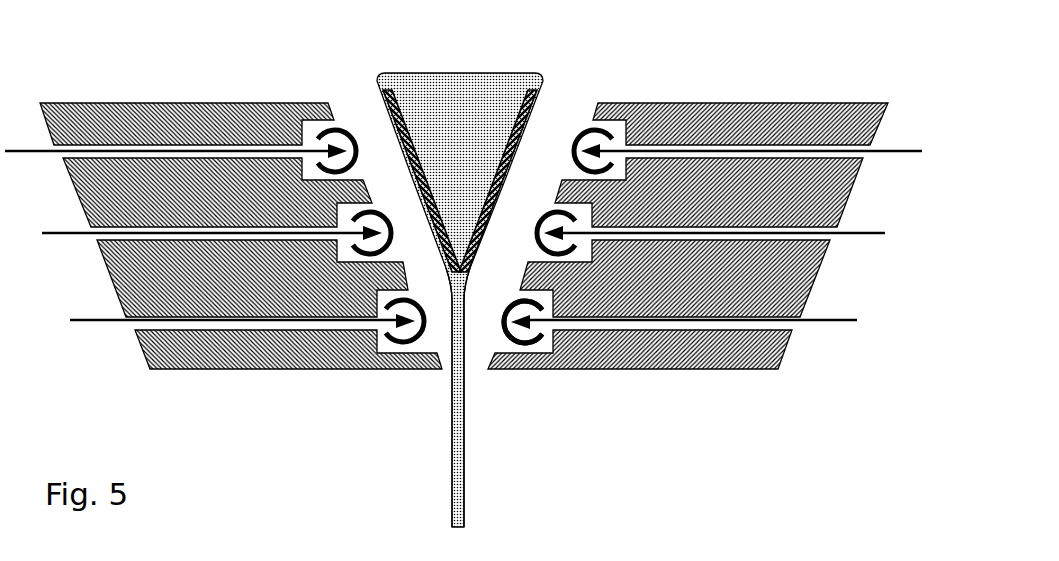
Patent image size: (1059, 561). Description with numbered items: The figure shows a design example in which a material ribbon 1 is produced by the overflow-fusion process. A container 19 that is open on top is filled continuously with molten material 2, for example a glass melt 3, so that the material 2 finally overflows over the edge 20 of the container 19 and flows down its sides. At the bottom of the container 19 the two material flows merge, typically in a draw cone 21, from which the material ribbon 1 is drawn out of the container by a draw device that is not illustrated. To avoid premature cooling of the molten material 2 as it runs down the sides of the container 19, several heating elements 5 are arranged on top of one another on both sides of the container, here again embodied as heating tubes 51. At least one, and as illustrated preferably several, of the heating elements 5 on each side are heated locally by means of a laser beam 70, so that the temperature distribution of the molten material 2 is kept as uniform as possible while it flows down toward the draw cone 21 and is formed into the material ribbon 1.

The material ribbon 1 is at (454, 464).
The molten material 2 is at (450, 263).
The glass melt 3 is at (417, 83).
The heating elements 5 is at (303, 128).
The container 19 is at (382, 100).
The edge 20 is at (525, 85).
The draw cone 21 is at (462, 298).
The heating tubes 51 is at (527, 350).
The laser beam 70 is at (48, 234).